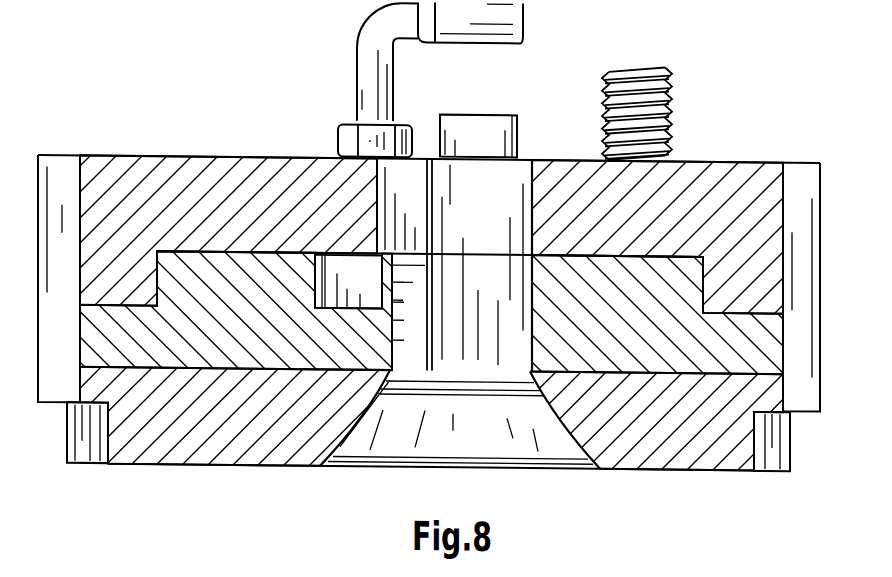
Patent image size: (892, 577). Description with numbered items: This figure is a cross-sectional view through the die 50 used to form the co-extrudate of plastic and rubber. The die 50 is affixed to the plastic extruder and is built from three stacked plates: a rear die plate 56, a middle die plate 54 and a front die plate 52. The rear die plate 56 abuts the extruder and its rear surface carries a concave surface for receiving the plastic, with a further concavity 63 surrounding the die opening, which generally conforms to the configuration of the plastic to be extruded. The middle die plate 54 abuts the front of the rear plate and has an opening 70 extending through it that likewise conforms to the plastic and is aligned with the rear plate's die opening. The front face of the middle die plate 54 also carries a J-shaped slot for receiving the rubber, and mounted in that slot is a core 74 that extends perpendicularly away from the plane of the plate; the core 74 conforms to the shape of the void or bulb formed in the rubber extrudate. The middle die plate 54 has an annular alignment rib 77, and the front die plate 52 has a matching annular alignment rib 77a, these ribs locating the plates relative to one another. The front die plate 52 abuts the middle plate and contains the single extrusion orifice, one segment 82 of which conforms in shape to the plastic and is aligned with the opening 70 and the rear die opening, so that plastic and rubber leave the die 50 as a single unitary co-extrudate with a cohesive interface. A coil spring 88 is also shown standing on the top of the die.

The die 50 is at (833, 295).
The front die plate 52 is at (38, 195).
The middle die plate 54 is at (88, 333).
The rear die plate 56 is at (113, 429).
The concavity 63 is at (540, 421).
The opening 70 is at (520, 304).
The core 74 is at (480, 120).
The annular alignment rib 77 is at (112, 295).
The annular alignment rib 77a is at (743, 285).
The segment 82 is at (487, 205).
The spring 88 is at (670, 76).